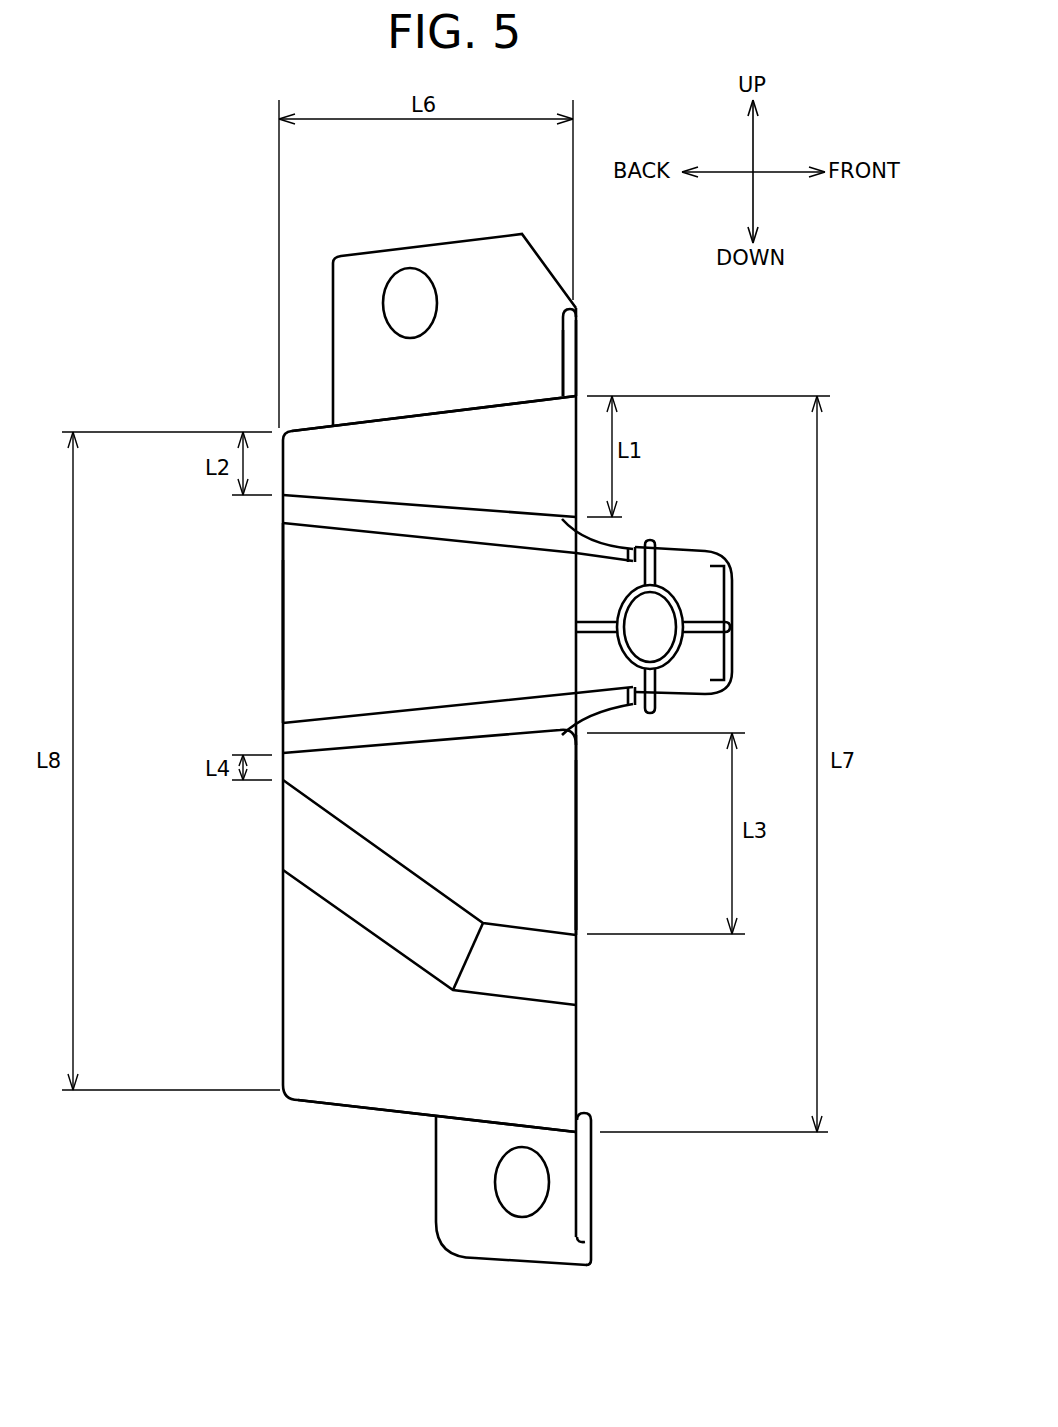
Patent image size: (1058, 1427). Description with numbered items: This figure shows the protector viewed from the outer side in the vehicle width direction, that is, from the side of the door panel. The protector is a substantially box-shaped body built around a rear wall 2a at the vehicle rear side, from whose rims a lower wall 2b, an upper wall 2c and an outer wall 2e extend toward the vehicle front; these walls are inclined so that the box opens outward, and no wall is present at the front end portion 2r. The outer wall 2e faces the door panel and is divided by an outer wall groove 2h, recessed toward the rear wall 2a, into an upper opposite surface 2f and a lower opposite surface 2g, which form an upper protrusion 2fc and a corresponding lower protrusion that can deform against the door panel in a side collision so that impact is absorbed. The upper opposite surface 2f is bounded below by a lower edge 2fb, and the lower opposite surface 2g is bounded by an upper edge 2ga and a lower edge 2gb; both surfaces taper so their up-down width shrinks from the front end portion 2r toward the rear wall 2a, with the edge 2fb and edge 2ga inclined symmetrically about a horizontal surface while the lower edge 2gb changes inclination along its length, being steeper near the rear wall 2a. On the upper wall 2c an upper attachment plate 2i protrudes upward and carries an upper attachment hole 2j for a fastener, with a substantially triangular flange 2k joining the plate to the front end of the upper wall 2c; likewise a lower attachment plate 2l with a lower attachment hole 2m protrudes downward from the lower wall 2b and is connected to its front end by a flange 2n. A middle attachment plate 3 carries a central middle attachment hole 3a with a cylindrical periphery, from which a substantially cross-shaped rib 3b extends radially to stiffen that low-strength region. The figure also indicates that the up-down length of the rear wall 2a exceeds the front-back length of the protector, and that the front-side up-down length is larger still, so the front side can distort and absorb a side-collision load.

The rear wall 2a is at (283, 942).
The lower wall 2b is at (325, 1105).
The upper wall 2c is at (535, 400).
The outer wall 2e is at (318, 1008).
The upper opposite surface 2f is at (330, 462).
The lower edge 2fb is at (283, 513).
The upper protrusion 2fc is at (434, 413).
The lower opposite surface 2g is at (553, 768).
The upper edge 2ga is at (300, 748).
The lower edge 2gb is at (313, 808).
The outer wall groove 2h is at (305, 620).
The upper attachment plate 2i is at (487, 260).
The upper attachment hole 2j is at (390, 290).
The flange 2k is at (578, 367).
The lower attachment plate 2l is at (460, 1200).
The lower attachment hole 2m is at (517, 1205).
The flange 2n is at (592, 1205).
The front end portion 2r is at (577, 893).
The middle attachment plate 3 is at (678, 568).
The middle attachment hole 3a is at (670, 643).
The rib 3b is at (705, 616).